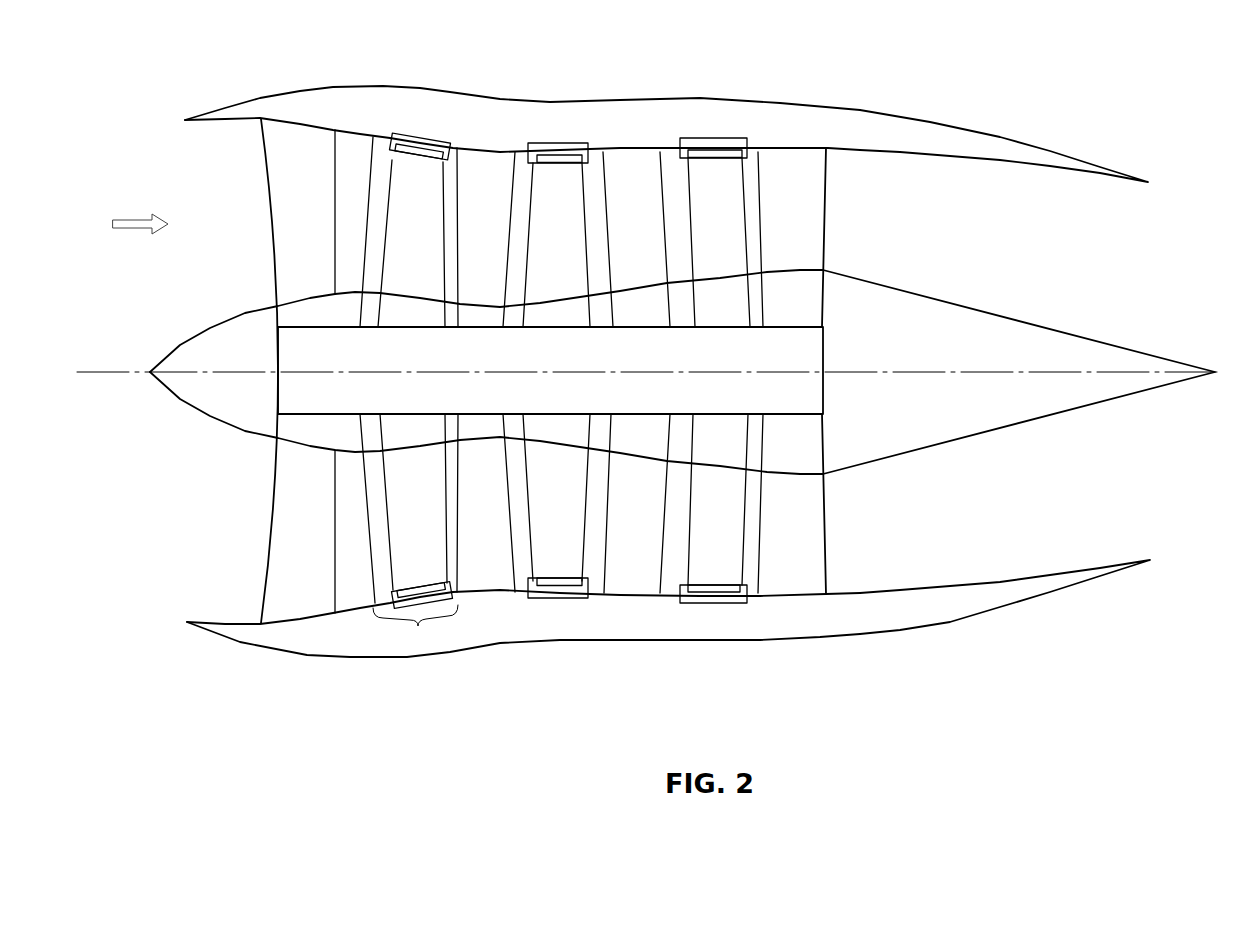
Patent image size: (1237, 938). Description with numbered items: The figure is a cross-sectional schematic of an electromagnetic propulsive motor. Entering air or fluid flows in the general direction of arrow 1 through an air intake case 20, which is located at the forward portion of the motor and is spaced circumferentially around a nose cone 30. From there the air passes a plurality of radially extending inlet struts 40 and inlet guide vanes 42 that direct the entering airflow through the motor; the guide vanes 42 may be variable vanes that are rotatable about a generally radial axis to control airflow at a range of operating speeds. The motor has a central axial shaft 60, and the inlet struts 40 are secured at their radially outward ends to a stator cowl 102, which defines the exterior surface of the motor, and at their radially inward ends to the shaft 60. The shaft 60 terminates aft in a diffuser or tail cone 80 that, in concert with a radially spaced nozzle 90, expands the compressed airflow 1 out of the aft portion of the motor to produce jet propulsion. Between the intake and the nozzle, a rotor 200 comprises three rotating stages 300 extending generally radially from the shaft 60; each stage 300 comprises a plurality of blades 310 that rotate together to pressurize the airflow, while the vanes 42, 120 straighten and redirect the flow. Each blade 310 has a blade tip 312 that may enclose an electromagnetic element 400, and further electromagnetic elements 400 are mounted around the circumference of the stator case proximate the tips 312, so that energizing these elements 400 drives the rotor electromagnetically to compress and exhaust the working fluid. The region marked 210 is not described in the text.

The arrow indicating direction of entering air 1 is at (133, 220).
The air intake case 20 is at (222, 110).
The nose cone 30 is at (178, 388).
The inlet strut 40 is at (280, 170).
The inlet guide vane 42 is at (347, 218).
The central axial shaft 60 is at (817, 355).
The tail cone 80 is at (1137, 347).
The nozzle 90 is at (1030, 150).
The stator cowl 102 is at (813, 123).
The vane 120 is at (488, 167).
The rotor 200 is at (733, 437).
The rotor stage 300 is at (647, 482).
The mounting region 210 is at (415, 629).
The blade 310 is at (413, 172).
The blade tip 312 is at (730, 167).
The electromagnetic element 400 is at (402, 135).